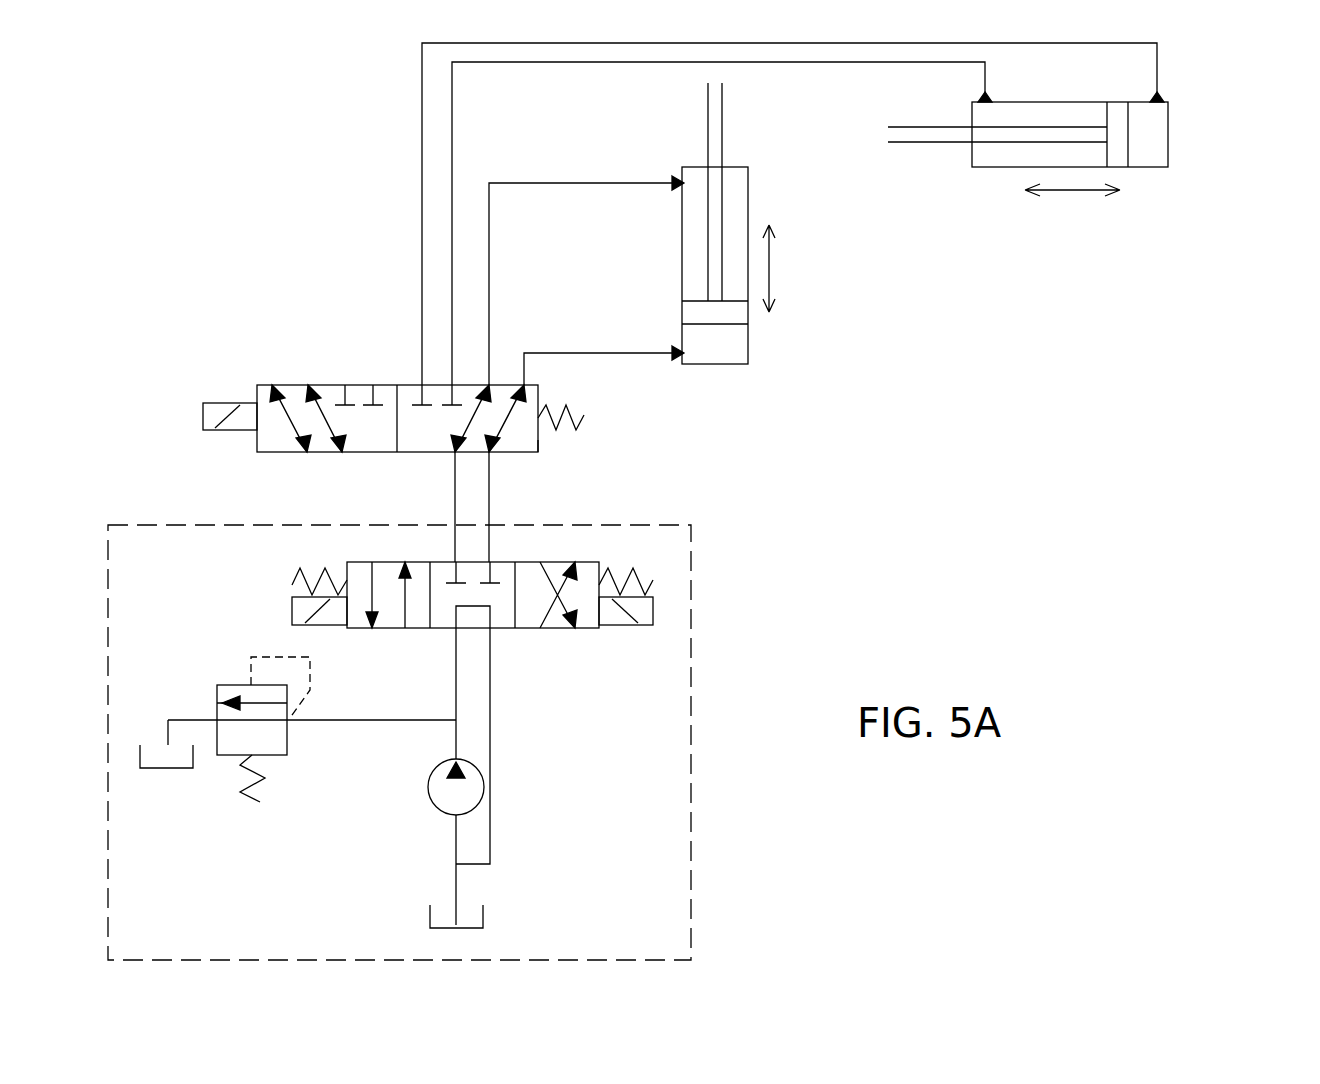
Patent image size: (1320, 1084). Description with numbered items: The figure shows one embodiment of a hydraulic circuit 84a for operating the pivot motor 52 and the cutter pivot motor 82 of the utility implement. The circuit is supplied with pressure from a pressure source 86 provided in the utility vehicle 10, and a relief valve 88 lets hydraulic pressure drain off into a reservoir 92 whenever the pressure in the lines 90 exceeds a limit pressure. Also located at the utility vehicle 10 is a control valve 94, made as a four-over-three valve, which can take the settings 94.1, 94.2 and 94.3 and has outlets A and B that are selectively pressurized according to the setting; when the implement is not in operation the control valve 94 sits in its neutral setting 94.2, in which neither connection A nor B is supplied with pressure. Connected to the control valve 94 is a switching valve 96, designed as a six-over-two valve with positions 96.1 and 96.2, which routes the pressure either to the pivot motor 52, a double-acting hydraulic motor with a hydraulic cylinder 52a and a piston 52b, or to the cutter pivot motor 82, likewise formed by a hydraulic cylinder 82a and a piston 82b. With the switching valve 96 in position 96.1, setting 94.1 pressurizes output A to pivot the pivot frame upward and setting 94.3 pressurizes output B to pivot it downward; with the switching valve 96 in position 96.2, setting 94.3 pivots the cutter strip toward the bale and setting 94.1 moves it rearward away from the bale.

The utility vehicle 10 is at (691, 600).
The pivot motor 52 is at (691, 242).
The hydraulic cylinder 52a is at (750, 355).
The piston 52b is at (708, 124).
The cutter pivot motor 82 is at (1093, 153).
The hydraulic cylinder 82a is at (1155, 170).
The piston 82b is at (925, 146).
The hydraulic circuit 84a is at (1005, 525).
The pressure source 86 is at (432, 795).
The relief valve 88 is at (225, 777).
The lines 90 is at (900, 66).
The reservoir 92 is at (160, 770).
The control valve 94 is at (472, 652).
The position of the control valve 94.1 is at (372, 630).
The neutral setting 94.2 is at (472, 562).
The position of the control valve 94.3 is at (588, 630).
The switching valve 96 is at (391, 395).
The position of the switching valve 96.1 is at (533, 452).
The position of the switching valve 96.2 is at (258, 380).